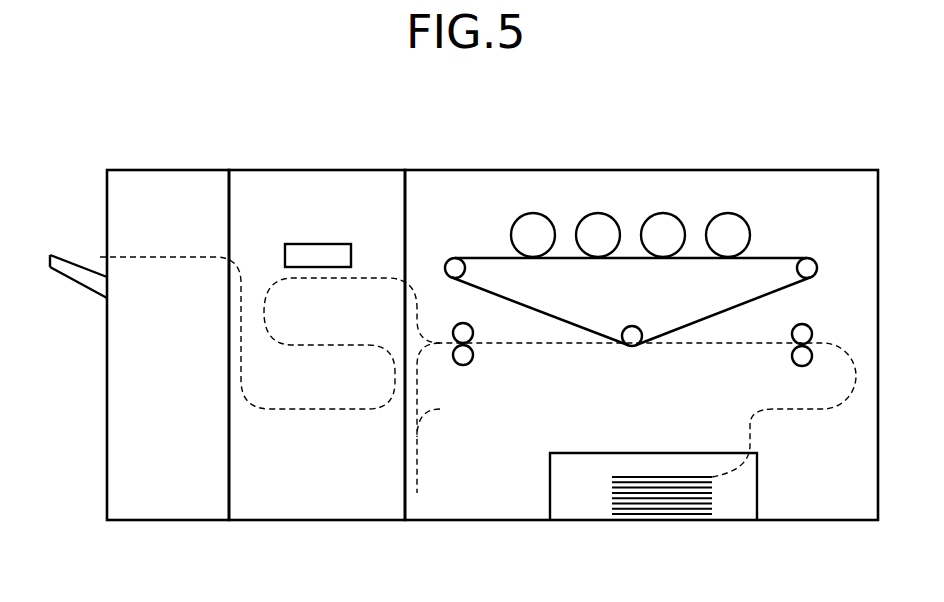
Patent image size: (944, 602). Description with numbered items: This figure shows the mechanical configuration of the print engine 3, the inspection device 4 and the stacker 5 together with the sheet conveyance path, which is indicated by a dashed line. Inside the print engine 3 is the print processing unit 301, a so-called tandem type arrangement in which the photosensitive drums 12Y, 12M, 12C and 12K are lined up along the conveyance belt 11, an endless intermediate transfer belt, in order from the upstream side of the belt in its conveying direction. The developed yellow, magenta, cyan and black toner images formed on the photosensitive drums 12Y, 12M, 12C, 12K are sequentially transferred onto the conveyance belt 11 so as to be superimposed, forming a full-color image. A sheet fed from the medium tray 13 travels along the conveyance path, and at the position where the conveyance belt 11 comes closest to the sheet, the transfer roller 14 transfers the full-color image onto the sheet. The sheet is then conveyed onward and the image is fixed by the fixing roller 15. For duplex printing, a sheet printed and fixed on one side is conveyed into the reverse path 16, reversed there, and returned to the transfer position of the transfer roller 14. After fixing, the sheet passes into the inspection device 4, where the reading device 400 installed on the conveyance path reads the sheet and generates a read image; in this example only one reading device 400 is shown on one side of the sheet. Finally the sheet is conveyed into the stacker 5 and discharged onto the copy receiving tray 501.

The stacker 5 is at (158, 170).
The inspection device 4 is at (308, 170).
The print engine 3 is at (793, 170).
The print processing unit 301 is at (852, 206).
The copy receiving tray 501 is at (84, 268).
The reading device 400 is at (318, 244).
The reverse path 16 is at (417, 473).
The photosensitive drum 12K is at (520, 214).
The photosensitive drum 12C is at (585, 214).
The photosensitive drum 12M is at (649, 214).
The photosensitive drum 12Y is at (715, 214).
The conveyance belt 11 is at (693, 321).
The transfer roller 14 is at (623, 326).
The fixing roller 15 is at (456, 327).
The medium tray 13 is at (733, 515).